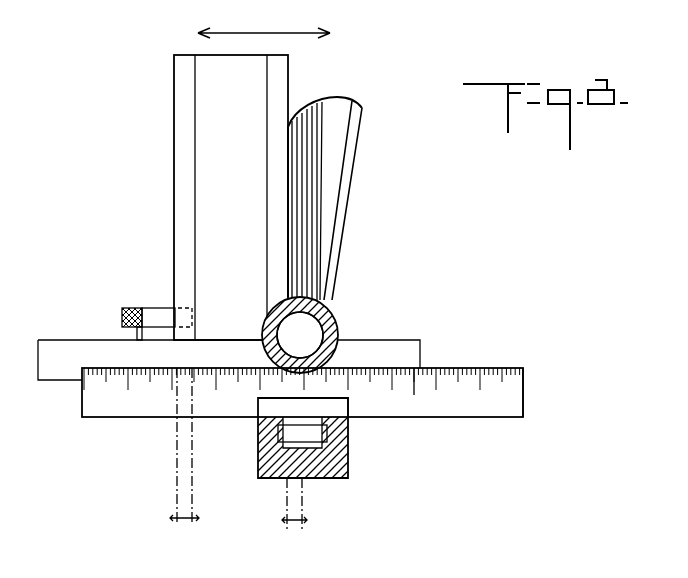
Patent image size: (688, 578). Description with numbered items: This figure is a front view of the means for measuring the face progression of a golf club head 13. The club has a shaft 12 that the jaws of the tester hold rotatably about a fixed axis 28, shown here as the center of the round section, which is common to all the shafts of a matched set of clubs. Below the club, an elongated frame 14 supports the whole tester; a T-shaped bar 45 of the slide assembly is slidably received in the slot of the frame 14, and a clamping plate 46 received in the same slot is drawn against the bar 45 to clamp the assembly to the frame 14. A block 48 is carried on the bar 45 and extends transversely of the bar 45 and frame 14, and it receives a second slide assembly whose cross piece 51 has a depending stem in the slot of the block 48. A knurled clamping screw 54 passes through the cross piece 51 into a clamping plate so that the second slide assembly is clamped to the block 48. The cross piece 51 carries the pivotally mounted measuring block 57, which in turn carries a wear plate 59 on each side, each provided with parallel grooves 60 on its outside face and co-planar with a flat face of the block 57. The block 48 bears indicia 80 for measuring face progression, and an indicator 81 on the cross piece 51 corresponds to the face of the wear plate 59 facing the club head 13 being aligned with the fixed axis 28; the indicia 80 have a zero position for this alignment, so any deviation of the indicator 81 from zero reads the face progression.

The shaft 12 is at (335, 321).
The golf club head 13 is at (337, 165).
The elongated frame 14 is at (330, 469).
The fixed axis 28 is at (298, 338).
The T-shaped bar 45 is at (262, 408).
The clamping plate 46 is at (327, 437).
The block 48 is at (450, 417).
The cross piece 51 is at (413, 340).
The clamping screw 54 is at (132, 308).
The measuring block 57 is at (260, 71).
The wear plate 59 is at (180, 104).
The parallel grooves 60 is at (283, 95).
The indicia 80 is at (97, 377).
The indicator 81 is at (177, 363).